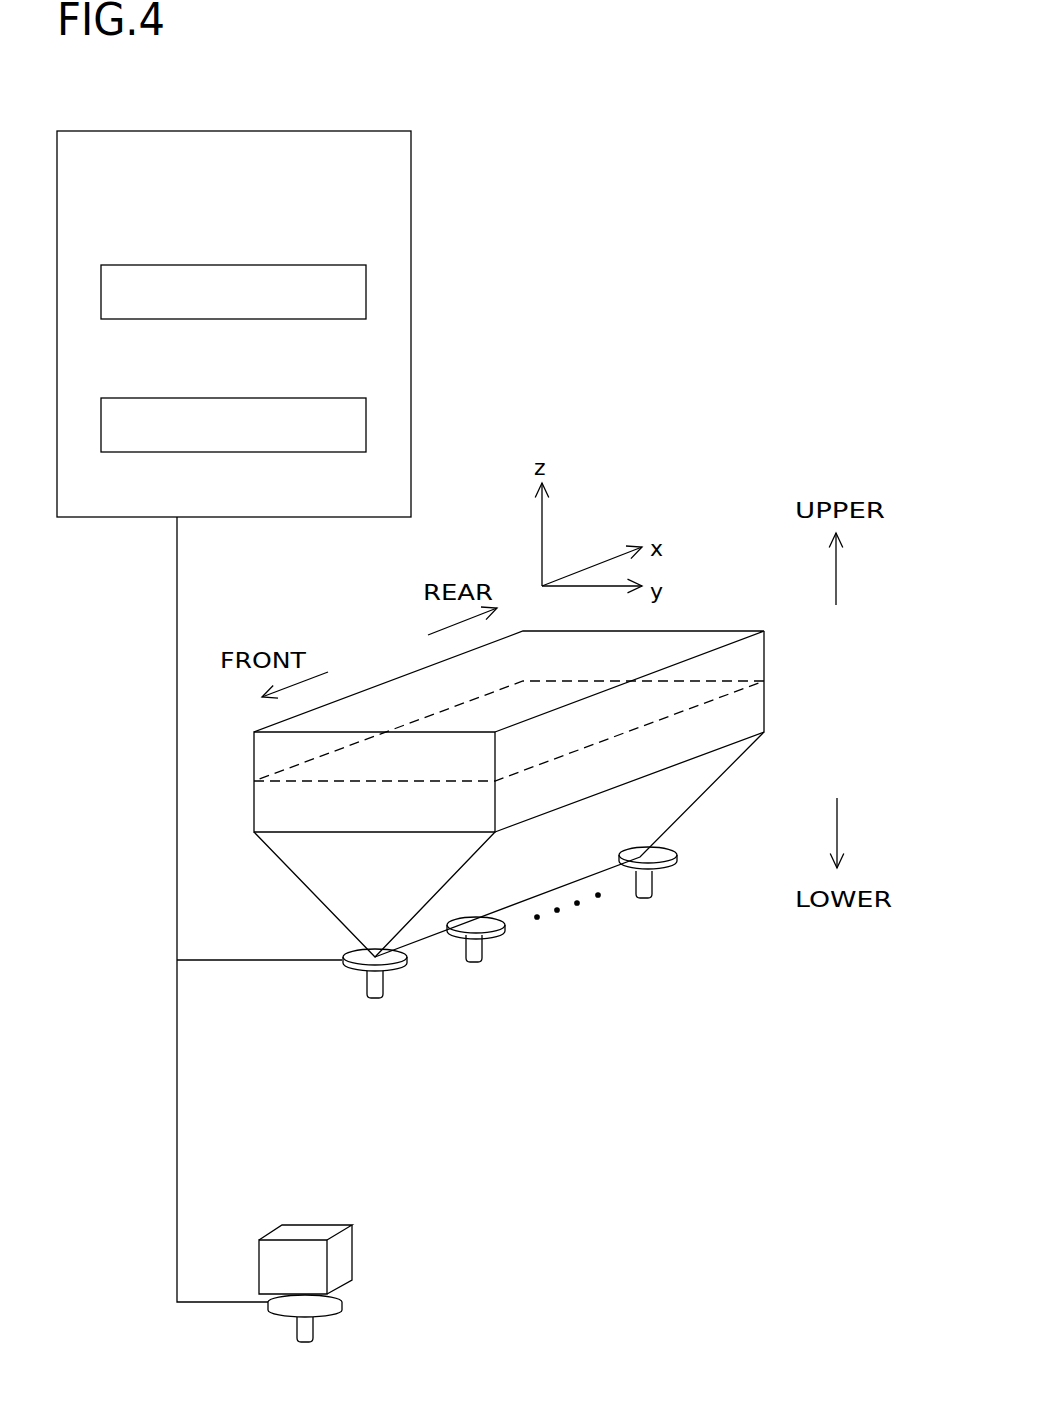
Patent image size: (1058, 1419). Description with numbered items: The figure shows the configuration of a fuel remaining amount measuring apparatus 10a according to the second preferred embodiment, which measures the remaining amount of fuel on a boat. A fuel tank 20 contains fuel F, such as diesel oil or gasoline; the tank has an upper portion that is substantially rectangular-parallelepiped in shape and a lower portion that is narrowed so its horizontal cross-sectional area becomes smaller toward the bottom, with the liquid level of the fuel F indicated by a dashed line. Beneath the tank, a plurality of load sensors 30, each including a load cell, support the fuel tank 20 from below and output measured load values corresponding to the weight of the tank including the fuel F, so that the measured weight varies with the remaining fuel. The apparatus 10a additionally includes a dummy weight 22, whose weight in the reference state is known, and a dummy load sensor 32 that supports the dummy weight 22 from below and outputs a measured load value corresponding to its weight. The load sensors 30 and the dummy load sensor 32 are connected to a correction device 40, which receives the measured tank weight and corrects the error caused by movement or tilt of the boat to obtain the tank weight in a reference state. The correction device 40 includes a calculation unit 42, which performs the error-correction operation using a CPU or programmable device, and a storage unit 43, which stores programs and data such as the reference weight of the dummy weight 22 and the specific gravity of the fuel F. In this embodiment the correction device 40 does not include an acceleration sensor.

The correction device 40 is at (282, 131).
The calculation unit 42 is at (279, 265).
The storage unit 43 is at (279, 398).
The fuel remaining amount measuring apparatus 10a is at (665, 225).
The fuel tank 20 is at (682, 637).
The fuel F is at (722, 718).
The load sensor 30 is at (383, 985).
The dummy weight 22 is at (342, 1250).
The dummy load sensor 32 is at (313, 1325).